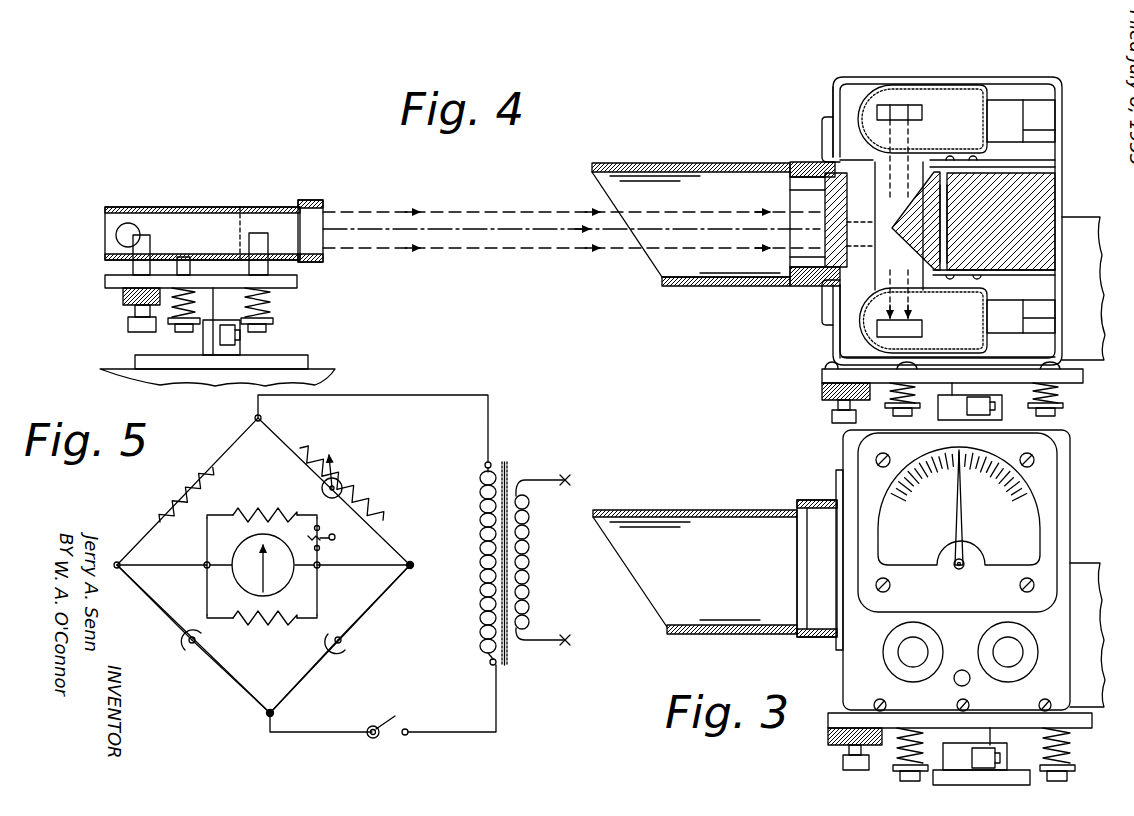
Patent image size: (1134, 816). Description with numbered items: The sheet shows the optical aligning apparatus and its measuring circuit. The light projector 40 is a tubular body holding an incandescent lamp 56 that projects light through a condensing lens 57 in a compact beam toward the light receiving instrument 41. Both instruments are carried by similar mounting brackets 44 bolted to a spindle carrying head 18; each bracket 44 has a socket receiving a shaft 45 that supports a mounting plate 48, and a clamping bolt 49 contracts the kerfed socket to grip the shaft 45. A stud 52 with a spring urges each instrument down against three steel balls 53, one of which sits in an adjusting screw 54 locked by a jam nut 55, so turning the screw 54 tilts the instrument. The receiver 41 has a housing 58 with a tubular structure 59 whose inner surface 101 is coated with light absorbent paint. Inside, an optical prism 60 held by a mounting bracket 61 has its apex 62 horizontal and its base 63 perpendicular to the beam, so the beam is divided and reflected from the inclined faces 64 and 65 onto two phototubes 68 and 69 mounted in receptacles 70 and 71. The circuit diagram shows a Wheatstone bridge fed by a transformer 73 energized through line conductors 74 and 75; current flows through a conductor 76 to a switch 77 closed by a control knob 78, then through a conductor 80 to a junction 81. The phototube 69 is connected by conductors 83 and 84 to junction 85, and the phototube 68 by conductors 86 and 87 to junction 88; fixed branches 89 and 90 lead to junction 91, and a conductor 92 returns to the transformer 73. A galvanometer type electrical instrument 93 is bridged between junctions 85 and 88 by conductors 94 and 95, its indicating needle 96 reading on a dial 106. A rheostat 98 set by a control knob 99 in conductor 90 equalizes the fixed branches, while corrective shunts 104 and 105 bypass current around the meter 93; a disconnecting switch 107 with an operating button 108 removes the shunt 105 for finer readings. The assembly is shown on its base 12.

In FIG. 5, the bridge circuit 12 is at (143, 628).
In FIG. 4, the spindle carrying head 18 is at (115, 368).
In FIG. 4, the light projector 40 is at (280, 207).
In FIG. 4, the light receiving instrument 41 is at (1070, 92).
In FIG. 3, the light receiving instrument 41 is at (1064, 534).
In FIG. 4, the mounting bracket 44 is at (300, 355).
In FIG. 3, the mounting bracket 44 is at (937, 770).
In FIG. 4, the shaft 45 is at (213, 330).
In FIG. 3, the shaft 45 is at (1003, 745).
In FIG. 4, the mounting plate 48 is at (297, 286).
In FIG. 3, the mounting plate 48 is at (840, 722).
In FIG. 4, the clamping bolt 49 is at (237, 343).
In FIG. 3, the clamping bolt 49 is at (1000, 763).
In FIG. 4, the stud 52 is at (190, 268).
In FIG. 3, the stud 52 is at (905, 713).
In FIG. 4, the steel ball 53 is at (133, 268).
In FIG. 3, the steel ball 53 is at (848, 710).
In FIG. 4, the adjusting screw 54 is at (130, 312).
In FIG. 3, the adjusting screw 54 is at (848, 757).
In FIG. 4, the jam nut 55 is at (123, 297).
In FIG. 3, the jam nut 55 is at (828, 740).
In FIG. 4, the incandescent lamp 56 is at (116, 234).
In FIG. 4, the condensing lens 57 is at (248, 218).
In FIG. 4, the housing 58 is at (833, 98).
In FIG. 4, the tubular structure 59 is at (650, 163).
In FIG. 3, the tubular structure 59 is at (667, 530).
In FIG. 4, the optical prism 60 is at (925, 195).
In FIG. 4, the mounting bracket 61 is at (1058, 188).
In FIG. 4, the apex 62 is at (910, 226).
In FIG. 4, the base 63 is at (950, 238).
In FIG. 4, the inclined face 64 is at (915, 250).
In FIG. 4, the inclined face 65 is at (831, 220).
In FIG. 4, the phototube 68 is at (858, 330).
In FIG. 5, the phototube 68 is at (190, 652).
In FIG. 4, the phototube 69 is at (948, 86).
In FIG. 5, the phototube 69 is at (336, 652).
In FIG. 4, the receptacle 70 is at (1038, 318).
In FIG. 4, the receptacle 71 is at (1032, 100).
In FIG. 5, the transformer 73 is at (504, 670).
In FIG. 5, the line conductor 74 is at (538, 480).
In FIG. 5, the line conductor 75 is at (540, 640).
In FIG. 5, the conductor 76 is at (438, 733).
In FIG. 5, the switch 77 is at (390, 720).
In FIG. 5, the control knob 78 is at (372, 740).
In FIG. 3, the control knob 78 is at (890, 657).
In FIG. 5, the conductor 80 is at (290, 733).
In FIG. 5, the junction 81 is at (274, 713).
In FIG. 5, the conductor 83 is at (298, 676).
In FIG. 5, the conductor 84 is at (365, 628).
In FIG. 5, the junction 85 is at (413, 565).
In FIG. 5, the conductor 86 is at (228, 680).
In FIG. 5, the conductor 87 is at (172, 612).
In FIG. 5, the junction 88 is at (117, 562).
In FIG. 5, the conductor 89 is at (176, 505).
In FIG. 5, the conductor 90 is at (380, 482).
In FIG. 5, the junction 91 is at (255, 422).
In FIG. 5, the conductor 92 is at (363, 395).
In FIG. 5, the galvanometer type electrical instrument 93 is at (233, 582).
In FIG. 5, the conductor 94 is at (348, 566).
In FIG. 5, the conductor 95 is at (158, 562).
In FIG. 5, the indicating needle 96 is at (261, 552).
In FIG. 3, the indicating needle 96 is at (950, 530).
In FIG. 5, the rheostat 98 is at (318, 478).
In FIG. 5, the control knob 99 is at (342, 488).
In FIG. 3, the control knob 99 is at (1012, 660).
In FIG. 4, the inner surface 101 is at (665, 279).
In FIG. 5, the corrective shunt 104 is at (227, 622).
In FIG. 5, the corrective shunt 105 is at (223, 515).
In FIG. 5, the dial 106 is at (280, 585).
In FIG. 3, the dial 106 is at (880, 525).
In FIG. 5, the disconnecting switch 107 is at (320, 533).
In FIG. 5, the operating button 108 is at (337, 537).
In FIG. 3, the operating button 108 is at (962, 668).